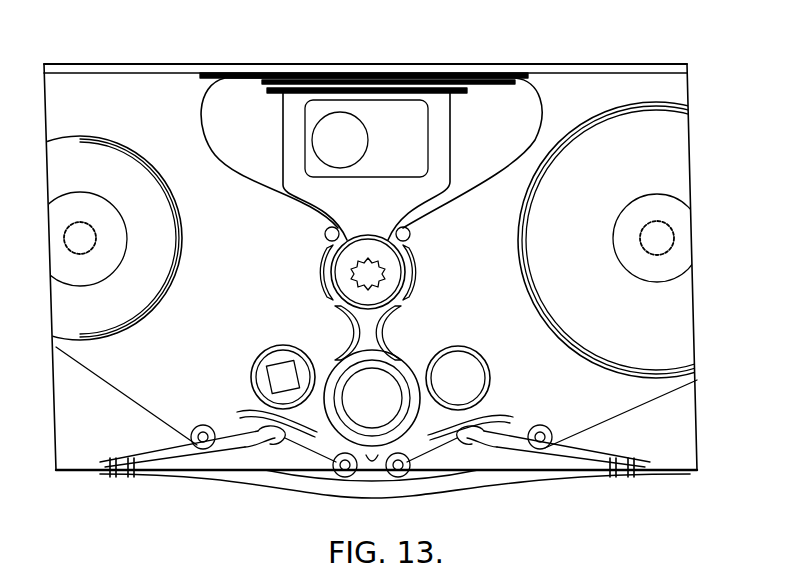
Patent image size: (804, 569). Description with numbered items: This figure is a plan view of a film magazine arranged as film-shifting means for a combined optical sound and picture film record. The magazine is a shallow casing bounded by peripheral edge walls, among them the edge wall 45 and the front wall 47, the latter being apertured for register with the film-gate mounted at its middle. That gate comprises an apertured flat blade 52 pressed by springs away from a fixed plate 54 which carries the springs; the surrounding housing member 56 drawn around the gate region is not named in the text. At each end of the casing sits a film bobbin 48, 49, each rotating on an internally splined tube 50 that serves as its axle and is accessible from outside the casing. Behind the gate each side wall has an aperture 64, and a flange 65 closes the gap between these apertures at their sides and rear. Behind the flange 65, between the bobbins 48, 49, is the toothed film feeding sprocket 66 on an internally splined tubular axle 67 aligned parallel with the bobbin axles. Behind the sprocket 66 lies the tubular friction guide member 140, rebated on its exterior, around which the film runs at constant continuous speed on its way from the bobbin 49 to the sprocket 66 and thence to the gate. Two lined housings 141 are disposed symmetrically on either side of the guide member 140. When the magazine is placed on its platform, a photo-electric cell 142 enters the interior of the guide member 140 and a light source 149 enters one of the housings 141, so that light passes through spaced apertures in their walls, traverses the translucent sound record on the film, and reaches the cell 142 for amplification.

The peripheral edge wall 45 is at (660, 474).
The front wall 47 is at (641, 63).
The film bobbin 48 is at (655, 171).
The film bobbin 49 is at (120, 156).
The internally splined tube 50 is at (95, 239).
The apertured flat blade 52 is at (466, 76).
The fixed plate 54 is at (462, 92).
The housing cover 56 is at (249, 173).
The aperture 64 is at (358, 140).
The flange 65 is at (441, 138).
The toothed film feeding sprocket 66 is at (346, 291).
The tubular axle 67 is at (376, 273).
The tubular friction guide member 140 is at (412, 372).
The lined housing 141 is at (256, 368).
The photo-electric cell 142 is at (385, 427).
The light source 149 is at (268, 381).